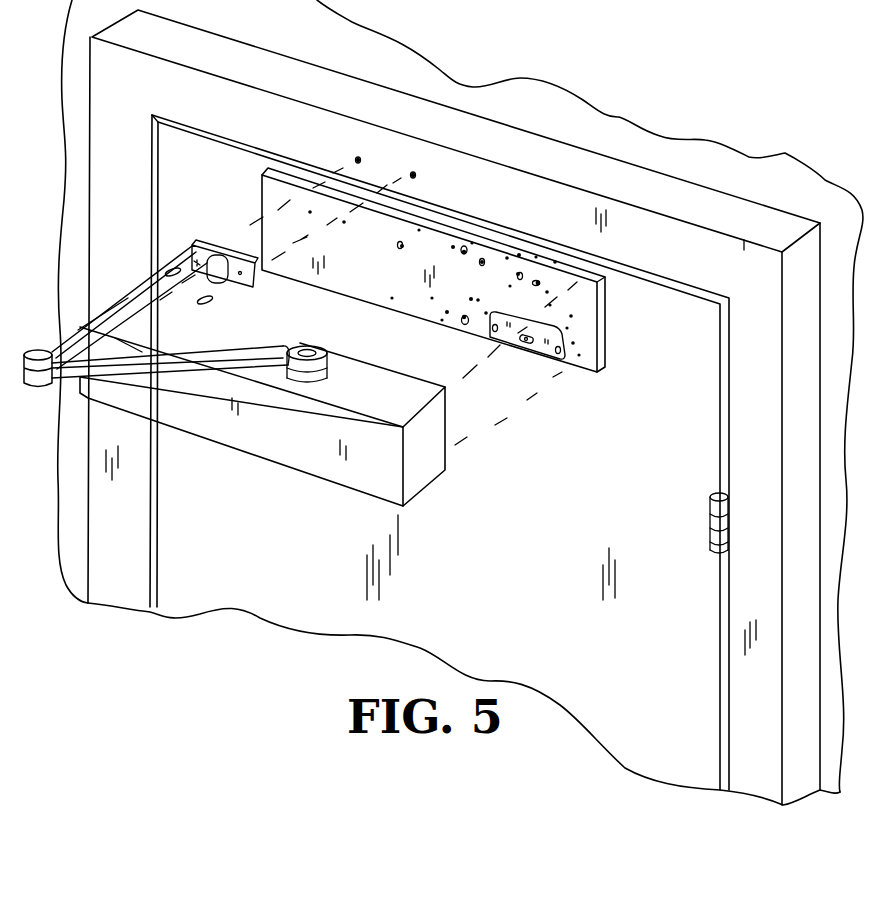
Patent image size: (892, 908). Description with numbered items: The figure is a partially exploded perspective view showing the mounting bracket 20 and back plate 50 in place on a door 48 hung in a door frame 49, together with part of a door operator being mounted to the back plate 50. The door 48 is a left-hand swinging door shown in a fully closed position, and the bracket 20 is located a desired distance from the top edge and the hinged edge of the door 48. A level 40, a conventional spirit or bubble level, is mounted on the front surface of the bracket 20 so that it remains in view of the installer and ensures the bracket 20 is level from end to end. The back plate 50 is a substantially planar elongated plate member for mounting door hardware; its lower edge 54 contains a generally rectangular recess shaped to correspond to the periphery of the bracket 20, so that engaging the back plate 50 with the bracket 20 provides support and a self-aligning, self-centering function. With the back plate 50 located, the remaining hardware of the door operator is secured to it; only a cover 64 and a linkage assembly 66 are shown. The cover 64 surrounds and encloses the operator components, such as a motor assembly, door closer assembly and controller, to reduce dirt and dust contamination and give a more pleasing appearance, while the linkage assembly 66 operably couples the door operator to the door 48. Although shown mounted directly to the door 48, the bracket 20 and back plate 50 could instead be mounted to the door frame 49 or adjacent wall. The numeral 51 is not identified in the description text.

The mounting bracket 20 is at (549, 361).
The level 40 is at (523, 341).
The door 48 is at (660, 761).
The door frame 49 is at (598, 166).
The back plate 50 is at (303, 182).
The wall 51 is at (677, 153).
The lower edge 54 is at (410, 306).
The cover 64 is at (307, 467).
The linkage assembly 66 is at (128, 298).